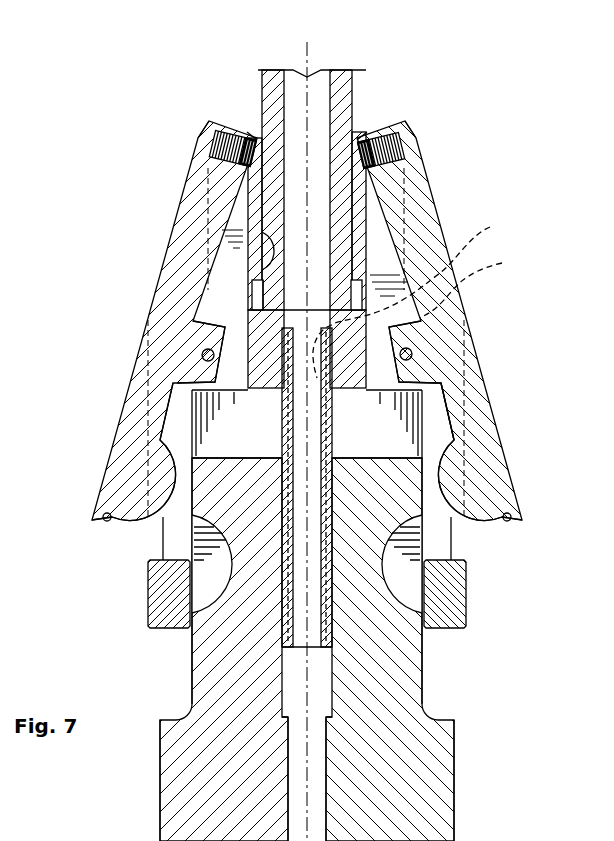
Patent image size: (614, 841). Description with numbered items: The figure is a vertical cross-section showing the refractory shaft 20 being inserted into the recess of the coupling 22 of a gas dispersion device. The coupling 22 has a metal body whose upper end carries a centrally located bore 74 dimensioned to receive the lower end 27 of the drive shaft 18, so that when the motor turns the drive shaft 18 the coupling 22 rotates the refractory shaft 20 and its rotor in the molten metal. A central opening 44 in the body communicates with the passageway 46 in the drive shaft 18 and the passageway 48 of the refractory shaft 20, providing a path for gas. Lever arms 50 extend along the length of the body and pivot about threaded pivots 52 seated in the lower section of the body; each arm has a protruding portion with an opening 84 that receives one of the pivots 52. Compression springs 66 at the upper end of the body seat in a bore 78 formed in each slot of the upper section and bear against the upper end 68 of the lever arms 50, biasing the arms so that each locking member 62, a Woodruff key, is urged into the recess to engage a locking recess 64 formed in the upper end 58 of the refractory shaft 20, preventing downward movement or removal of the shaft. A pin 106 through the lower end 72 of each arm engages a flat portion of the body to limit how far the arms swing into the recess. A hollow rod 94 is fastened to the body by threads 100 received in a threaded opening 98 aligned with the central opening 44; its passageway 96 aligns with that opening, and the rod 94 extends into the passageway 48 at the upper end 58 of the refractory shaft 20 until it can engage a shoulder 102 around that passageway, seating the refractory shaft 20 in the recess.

The drive shaft 18 is at (340, 95).
The refractory shaft 20 is at (395, 688).
The coupling 22 is at (476, 284).
The lower end of the drive shaft 27 is at (284, 300).
The central opening 44 is at (315, 295).
The passageway in the drive shaft 46 is at (345, 125).
The passageway of the refractory shaft 48 is at (322, 805).
The lever arms 50 is at (190, 230).
The pivots 52 is at (203, 362).
The upper end of the refractory shaft 58 is at (425, 605).
The locking member 62 is at (167, 490).
The locking recess 64 is at (188, 594).
The springs 66 is at (208, 126).
The upper end of the lever arms 68 is at (203, 165).
The lower end of the lever arms 72 is at (107, 500).
The bore 74 is at (247, 267).
The bore in the slot 78 is at (247, 137).
The opening in the protruding portion 84 is at (203, 353).
The hollow rod 94 is at (336, 470).
The passageway in the rod 96 is at (320, 655).
The threaded opening 98 is at (417, 294).
The threads on the rod 100 is at (422, 378).
The shoulder 102 is at (284, 700).
The pin 106 is at (100, 517).